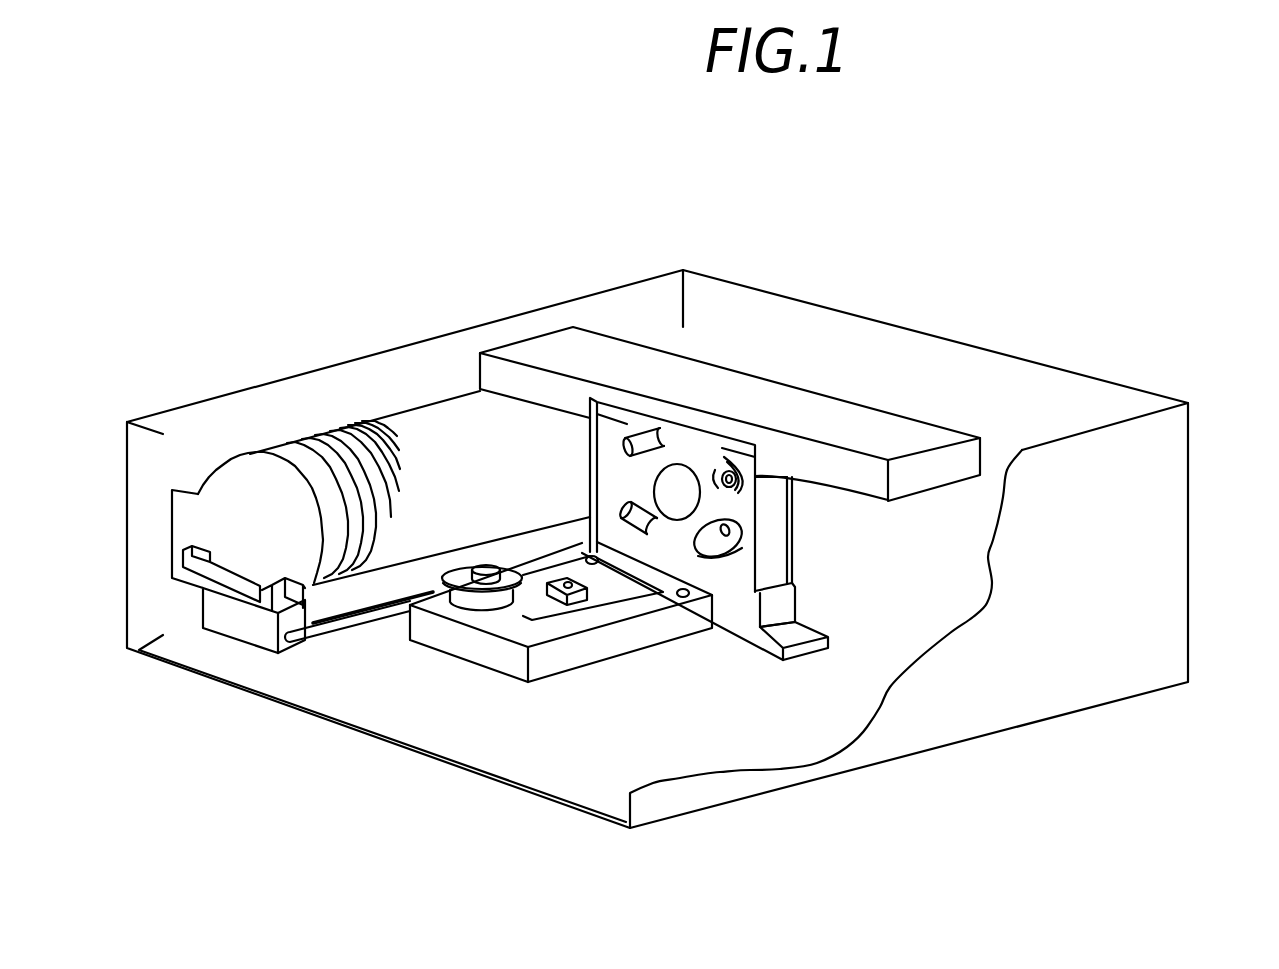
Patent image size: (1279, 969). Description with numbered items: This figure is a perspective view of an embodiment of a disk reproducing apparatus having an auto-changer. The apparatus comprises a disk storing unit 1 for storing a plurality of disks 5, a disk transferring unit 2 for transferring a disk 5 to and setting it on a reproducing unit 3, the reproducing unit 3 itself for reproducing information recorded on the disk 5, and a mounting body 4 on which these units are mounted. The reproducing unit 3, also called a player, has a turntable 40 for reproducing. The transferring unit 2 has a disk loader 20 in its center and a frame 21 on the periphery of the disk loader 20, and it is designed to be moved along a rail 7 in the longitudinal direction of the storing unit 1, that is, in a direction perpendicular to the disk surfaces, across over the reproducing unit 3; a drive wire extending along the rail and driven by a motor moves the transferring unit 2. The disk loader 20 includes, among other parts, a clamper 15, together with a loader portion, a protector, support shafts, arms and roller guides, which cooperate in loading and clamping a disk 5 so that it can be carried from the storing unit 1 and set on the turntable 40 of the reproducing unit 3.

The disk storing unit 1 is at (433, 404).
The disk transferring unit 2 is at (822, 417).
The reproducing unit 3 is at (545, 658).
The mounting body 4 is at (1197, 467).
The disk 5 is at (340, 473).
The rail 7 is at (320, 632).
The clamper 15 is at (677, 492).
The disk loader 20 is at (690, 448).
The frame 21 is at (772, 568).
The turntable 40 is at (608, 592).